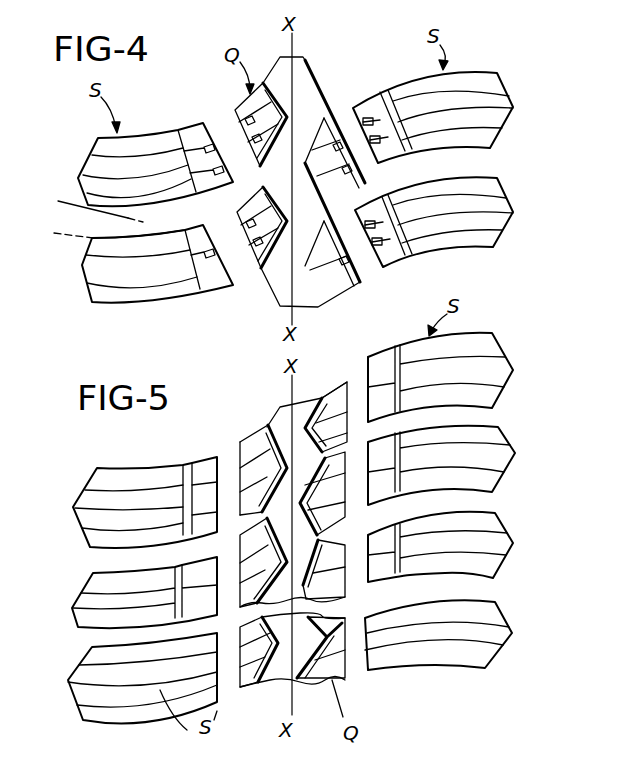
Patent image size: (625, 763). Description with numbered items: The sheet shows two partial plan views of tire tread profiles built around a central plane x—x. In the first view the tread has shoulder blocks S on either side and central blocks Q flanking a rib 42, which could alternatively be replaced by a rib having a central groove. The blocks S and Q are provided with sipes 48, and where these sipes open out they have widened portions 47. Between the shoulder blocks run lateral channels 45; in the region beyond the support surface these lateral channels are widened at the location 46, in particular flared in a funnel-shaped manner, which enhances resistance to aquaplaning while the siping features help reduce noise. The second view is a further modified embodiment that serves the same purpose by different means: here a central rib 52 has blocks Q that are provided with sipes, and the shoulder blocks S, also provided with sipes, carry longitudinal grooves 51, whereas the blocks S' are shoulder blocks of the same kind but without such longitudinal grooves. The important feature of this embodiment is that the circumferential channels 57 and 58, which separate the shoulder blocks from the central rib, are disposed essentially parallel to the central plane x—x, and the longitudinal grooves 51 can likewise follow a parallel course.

In FIG. 4, the rib 42 is at (306, 59).
In FIG. 4, the lateral channels 45 is at (148, 223).
In FIG. 4, the location 46 is at (70, 234).
In FIG. 4, the widened portions 47 is at (203, 121).
In FIG. 4, the sipes 48 is at (175, 133).
In FIG. 5, the longitudinal grooves 51 is at (177, 463).
In FIG. 5, the central rib 52 is at (275, 408).
In FIG. 5, the circumferential channel 57 is at (230, 462).
In FIG. 5, the circumferential channel 58 is at (360, 383).